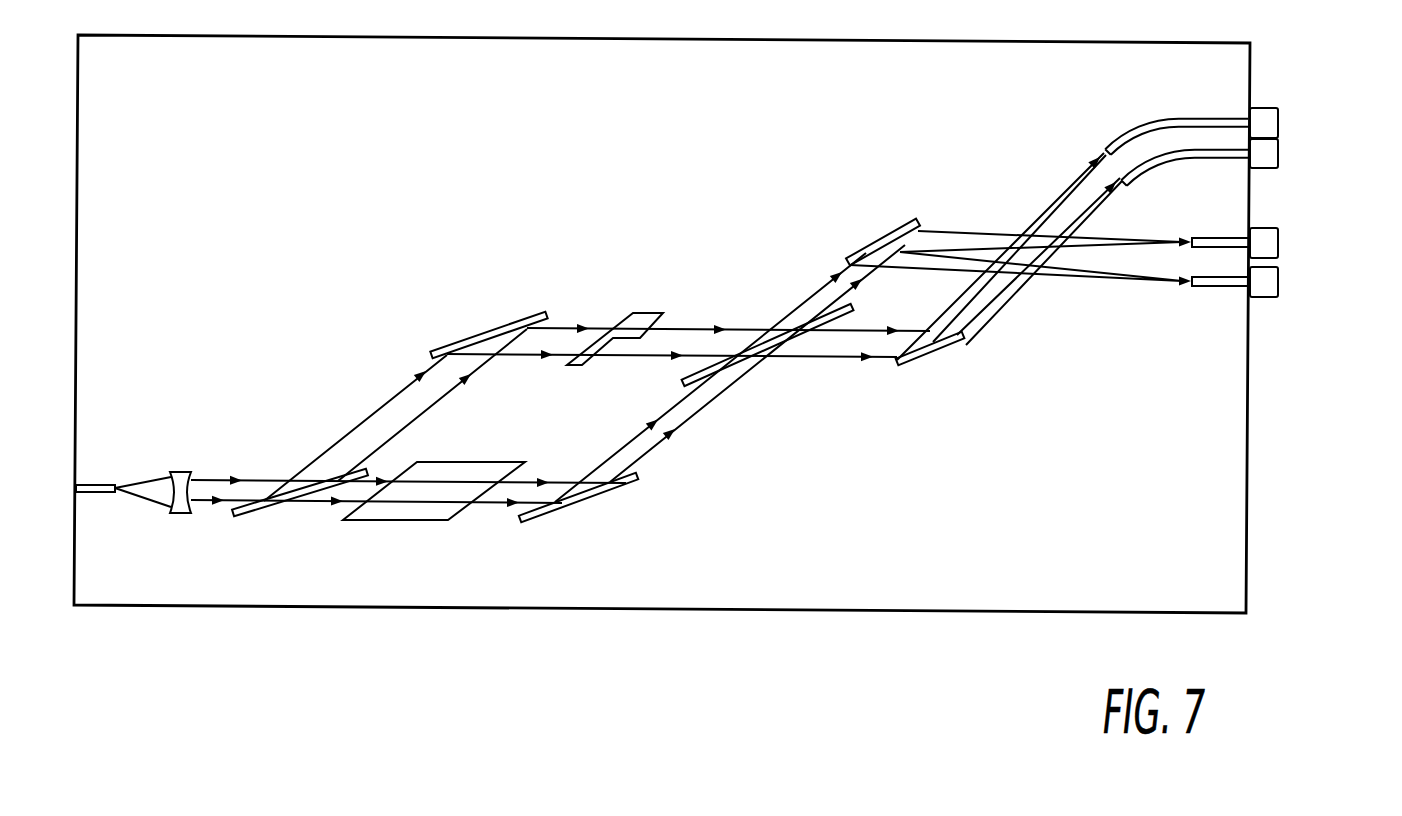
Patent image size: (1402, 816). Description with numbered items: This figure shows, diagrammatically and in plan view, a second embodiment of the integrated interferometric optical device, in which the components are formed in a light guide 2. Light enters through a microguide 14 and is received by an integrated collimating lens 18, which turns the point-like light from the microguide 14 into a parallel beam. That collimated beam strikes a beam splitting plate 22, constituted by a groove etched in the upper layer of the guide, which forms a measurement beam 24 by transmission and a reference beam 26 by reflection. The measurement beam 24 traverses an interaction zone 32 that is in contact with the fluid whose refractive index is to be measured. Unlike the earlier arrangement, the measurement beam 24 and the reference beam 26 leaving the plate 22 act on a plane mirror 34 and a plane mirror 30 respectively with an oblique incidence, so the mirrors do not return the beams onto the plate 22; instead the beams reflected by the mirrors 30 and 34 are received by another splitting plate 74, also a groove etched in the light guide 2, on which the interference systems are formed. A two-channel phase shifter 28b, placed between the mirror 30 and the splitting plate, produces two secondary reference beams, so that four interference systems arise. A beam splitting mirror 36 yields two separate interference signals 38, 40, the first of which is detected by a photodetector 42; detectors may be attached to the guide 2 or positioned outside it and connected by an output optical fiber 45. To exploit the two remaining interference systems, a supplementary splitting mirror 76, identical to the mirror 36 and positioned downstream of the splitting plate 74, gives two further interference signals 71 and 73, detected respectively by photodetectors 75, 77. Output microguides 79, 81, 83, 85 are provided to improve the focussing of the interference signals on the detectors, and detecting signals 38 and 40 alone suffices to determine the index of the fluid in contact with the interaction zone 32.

The light guide 2 is at (183, 614).
The microguide 14 is at (93, 493).
The integrated collimating lens 18 is at (182, 471).
The beam splitting plate 22 is at (240, 514).
The measurement beam 24 is at (490, 508).
The reference beam 26 is at (374, 416).
The two-channel phase shifter 28b is at (650, 315).
The plane mirror 30 is at (470, 341).
The interaction zone 32 is at (370, 521).
The plane mirror 34 is at (588, 497).
The beam splitting mirror 36 is at (880, 245).
The interference signal 38 is at (1117, 240).
The interference signal 40 is at (1072, 275).
The photodetector 42 is at (1278, 242).
The output optical fiber 45 is at (1276, 284).
The interference signal 71 is at (1042, 220).
The interference signal 73 is at (1085, 210).
The splitting plate 74 is at (702, 381).
The photodetector 75 is at (1278, 153).
The supplementary splitting mirror 76 is at (945, 352).
The photodetector 77 is at (1278, 112).
The output microguide 79 is at (1133, 135).
The output microguide 81 is at (1218, 148).
The output microguide 83 is at (1225, 238).
The output microguide 85 is at (1212, 287).